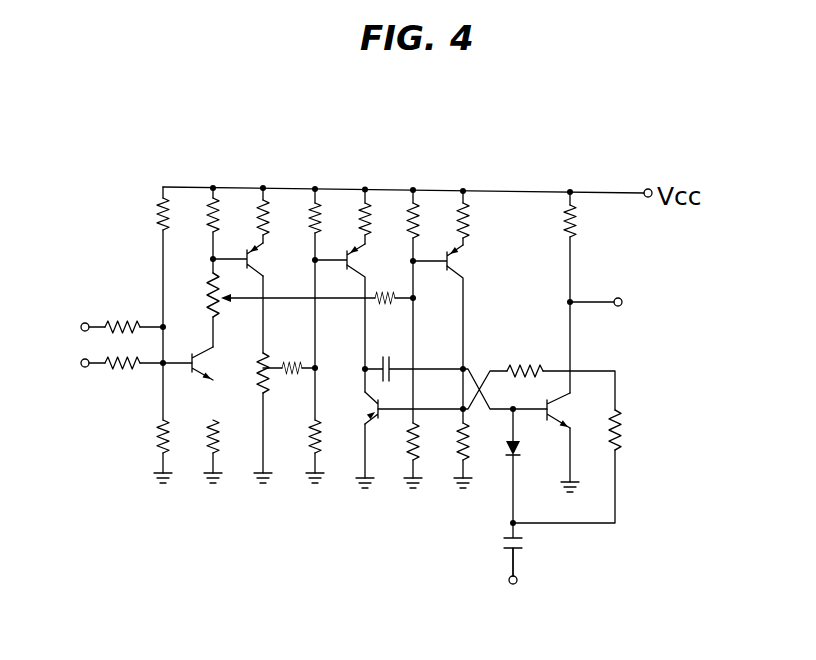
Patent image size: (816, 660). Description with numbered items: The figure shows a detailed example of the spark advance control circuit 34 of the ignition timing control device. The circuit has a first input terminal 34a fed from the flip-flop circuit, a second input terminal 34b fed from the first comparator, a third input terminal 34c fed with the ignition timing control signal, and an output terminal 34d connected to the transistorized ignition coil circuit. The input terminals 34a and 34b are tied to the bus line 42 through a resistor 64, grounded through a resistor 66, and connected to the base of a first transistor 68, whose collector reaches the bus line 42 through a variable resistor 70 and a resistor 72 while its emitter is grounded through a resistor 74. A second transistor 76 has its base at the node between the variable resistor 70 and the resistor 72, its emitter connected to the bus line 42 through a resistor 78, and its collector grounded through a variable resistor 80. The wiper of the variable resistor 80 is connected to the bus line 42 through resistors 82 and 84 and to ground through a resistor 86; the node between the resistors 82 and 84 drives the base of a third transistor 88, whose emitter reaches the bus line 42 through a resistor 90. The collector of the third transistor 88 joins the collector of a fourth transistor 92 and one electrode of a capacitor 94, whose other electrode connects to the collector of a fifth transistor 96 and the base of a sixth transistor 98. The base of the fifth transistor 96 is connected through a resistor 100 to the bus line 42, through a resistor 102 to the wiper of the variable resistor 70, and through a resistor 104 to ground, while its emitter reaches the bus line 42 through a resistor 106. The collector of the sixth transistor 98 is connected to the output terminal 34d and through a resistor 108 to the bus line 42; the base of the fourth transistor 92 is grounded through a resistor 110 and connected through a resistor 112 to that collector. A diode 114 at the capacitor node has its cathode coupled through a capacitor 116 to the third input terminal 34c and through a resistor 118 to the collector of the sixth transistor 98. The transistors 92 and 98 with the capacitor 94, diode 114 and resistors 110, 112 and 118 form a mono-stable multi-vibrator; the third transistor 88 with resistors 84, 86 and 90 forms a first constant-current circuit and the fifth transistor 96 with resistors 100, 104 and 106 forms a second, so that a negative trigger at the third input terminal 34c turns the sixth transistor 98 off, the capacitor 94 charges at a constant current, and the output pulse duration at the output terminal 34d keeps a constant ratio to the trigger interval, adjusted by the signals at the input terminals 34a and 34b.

The spark advance control circuit 34 is at (150, 220).
The first input terminal 34a is at (82, 324).
The second input terminal 34b is at (84, 367).
The third input terminal 34c is at (511, 586).
The output terminal 34d is at (621, 305).
The bus line 42 is at (520, 192).
The resistor 64 is at (168, 214).
The resistor 66 is at (160, 426).
The first transistor 68 is at (211, 362).
The variable resistor 70 is at (217, 305).
The resistor 72 is at (219, 214).
The resistor 74 is at (216, 448).
The second transistor 76 is at (262, 266).
The resistor 78 is at (268, 214).
The variable resistor 80 is at (266, 380).
The resistor 82 is at (287, 362).
The resistor 84 is at (320, 218).
The resistor 86 is at (318, 452).
The third transistor 88 is at (371, 263).
The resistor 90 is at (369, 212).
The fourth transistor 92 is at (374, 406).
The capacitor 94 is at (386, 366).
The fifth transistor 96 is at (464, 270).
The sixth transistor 98 is at (552, 402).
The resistor 100 is at (418, 214).
The resistor 102 is at (376, 300).
The resistor 104 is at (418, 432).
The resistor 106 is at (470, 216).
The resistor 108 is at (577, 218).
The resistor 110 is at (468, 455).
The resistor 112 is at (519, 368).
The diode 114 is at (519, 449).
The capacitor 116 is at (519, 538).
The resistor 118 is at (621, 436).